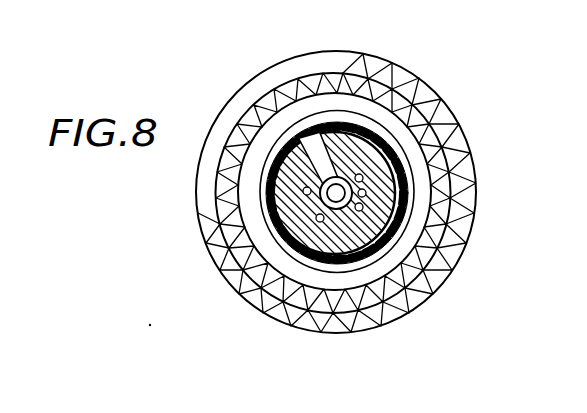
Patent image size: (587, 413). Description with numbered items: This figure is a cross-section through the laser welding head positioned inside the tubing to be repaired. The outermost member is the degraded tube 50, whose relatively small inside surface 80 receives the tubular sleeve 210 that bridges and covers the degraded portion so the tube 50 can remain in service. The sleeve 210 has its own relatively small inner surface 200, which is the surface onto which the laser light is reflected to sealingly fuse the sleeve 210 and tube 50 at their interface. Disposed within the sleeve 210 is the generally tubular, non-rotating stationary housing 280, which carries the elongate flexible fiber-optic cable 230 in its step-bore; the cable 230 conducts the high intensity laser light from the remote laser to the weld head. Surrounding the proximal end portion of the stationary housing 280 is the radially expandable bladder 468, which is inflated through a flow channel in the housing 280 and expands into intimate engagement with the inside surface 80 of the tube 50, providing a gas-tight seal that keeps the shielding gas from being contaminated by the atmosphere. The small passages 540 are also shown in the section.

The tube 50 is at (425, 289).
The inside surface 80 is at (417, 113).
The tubular sleeve 210 is at (341, 304).
The inner surface 200 is at (284, 259).
The radially expandable bladder 468 is at (357, 117).
The stationary housing 280 is at (388, 211).
The fiber-optic cable 230 is at (335, 195).
The passage 540 is at (364, 176).